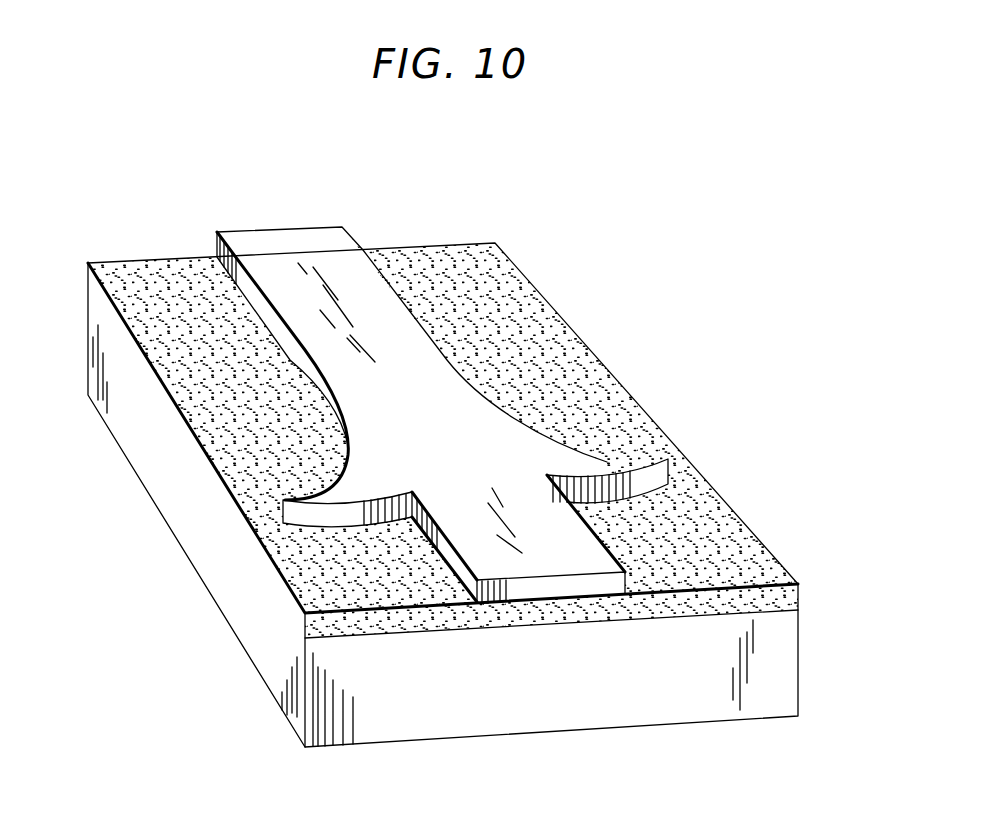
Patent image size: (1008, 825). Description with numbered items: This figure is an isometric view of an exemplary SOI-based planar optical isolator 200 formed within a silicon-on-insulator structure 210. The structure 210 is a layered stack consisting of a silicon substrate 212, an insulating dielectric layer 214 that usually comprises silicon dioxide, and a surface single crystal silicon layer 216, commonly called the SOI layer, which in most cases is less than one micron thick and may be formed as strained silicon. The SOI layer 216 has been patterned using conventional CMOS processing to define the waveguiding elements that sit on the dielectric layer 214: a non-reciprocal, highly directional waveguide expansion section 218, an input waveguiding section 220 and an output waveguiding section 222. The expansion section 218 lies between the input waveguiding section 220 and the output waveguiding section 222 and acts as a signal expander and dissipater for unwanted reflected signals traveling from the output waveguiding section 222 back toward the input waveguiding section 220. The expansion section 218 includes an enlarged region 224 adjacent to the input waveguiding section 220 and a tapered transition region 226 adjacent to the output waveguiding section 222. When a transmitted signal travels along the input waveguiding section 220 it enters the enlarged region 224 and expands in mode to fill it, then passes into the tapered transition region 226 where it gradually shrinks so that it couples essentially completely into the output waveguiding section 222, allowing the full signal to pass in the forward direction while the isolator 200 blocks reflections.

The SOI-based planar optical isolator 200 is at (709, 231).
The silicon-on-insulator structure 210 is at (635, 567).
The silicon substrate 212 is at (132, 428).
The insulating dielectric layer 214 is at (88, 290).
The surface single crystal silicon layer 216 is at (130, 263).
The waveguide expansion section 218 is at (470, 468).
The input waveguiding section 220 is at (567, 557).
The output waveguiding section 222 is at (290, 243).
The enlarged region 224 is at (607, 462).
The tapered transition region 226 is at (408, 382).